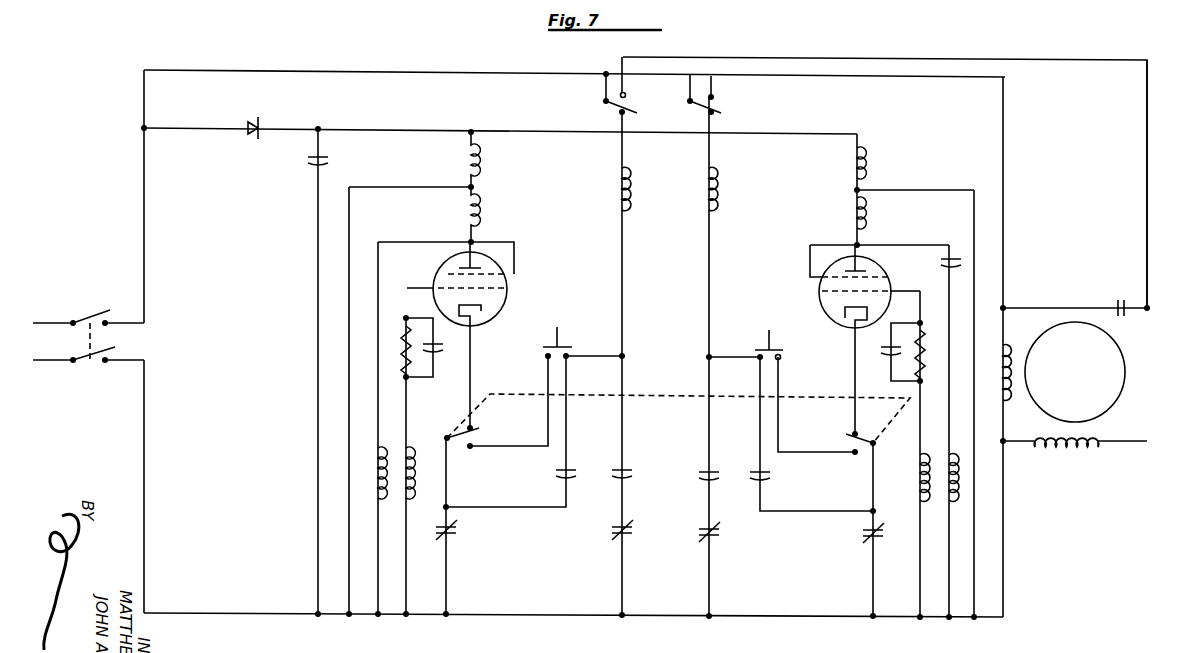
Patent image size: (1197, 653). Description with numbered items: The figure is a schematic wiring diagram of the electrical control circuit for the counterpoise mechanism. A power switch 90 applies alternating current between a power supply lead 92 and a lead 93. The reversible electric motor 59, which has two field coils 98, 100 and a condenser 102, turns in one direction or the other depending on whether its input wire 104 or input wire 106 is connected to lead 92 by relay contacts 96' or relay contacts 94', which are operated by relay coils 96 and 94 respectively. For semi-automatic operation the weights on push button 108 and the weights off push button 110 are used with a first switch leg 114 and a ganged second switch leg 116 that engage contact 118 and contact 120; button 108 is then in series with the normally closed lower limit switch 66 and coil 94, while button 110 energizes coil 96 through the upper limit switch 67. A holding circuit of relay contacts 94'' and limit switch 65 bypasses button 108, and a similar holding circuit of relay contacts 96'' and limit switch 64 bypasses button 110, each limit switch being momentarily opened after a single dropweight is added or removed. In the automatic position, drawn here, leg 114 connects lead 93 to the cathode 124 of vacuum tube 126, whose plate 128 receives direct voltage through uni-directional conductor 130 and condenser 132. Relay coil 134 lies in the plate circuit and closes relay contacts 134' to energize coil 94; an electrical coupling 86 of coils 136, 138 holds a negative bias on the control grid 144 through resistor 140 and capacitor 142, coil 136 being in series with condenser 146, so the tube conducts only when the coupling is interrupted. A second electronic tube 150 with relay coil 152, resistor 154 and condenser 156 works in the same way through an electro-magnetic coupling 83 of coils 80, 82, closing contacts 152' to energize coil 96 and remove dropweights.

The electric motor 59 is at (1125, 364).
The limit switch 64 is at (615, 540).
The limit switch 65 is at (703, 542).
The lower limit switch 66 is at (866, 543).
The upper limit switch 67 is at (442, 540).
The coil 80 is at (372, 484).
The coil 82 is at (408, 456).
The electro-magnetic coupling 83 is at (390, 452).
The electrical coupling 86 is at (934, 495).
The power switch 90 is at (78, 318).
The power supply lead 92 is at (230, 62).
The lead 93 is at (272, 617).
The relay coil 94 is at (734, 189).
The relay contacts 94' is at (600, 115).
The relay contacts 94'' is at (693, 491).
The relay coil 96 is at (644, 189).
The relay contacts 96' is at (730, 101).
The relay contacts 96'' is at (640, 456).
The field coil 98 is at (1008, 350).
The field coil 100 is at (1081, 454).
The condenser 102 is at (1120, 300).
The input wire 104 is at (1004, 118).
The input wire 106 is at (1147, 137).
The weights on push button 108 is at (768, 346).
The weights off push button 110 is at (578, 331).
The first switch leg 114 is at (845, 437).
The second switch leg 116 is at (480, 436).
The contact 118 is at (853, 456).
The contact 120 is at (473, 450).
The cathode 124 is at (845, 310).
The vacuum tube 126 is at (822, 290).
The plate 128 is at (862, 270).
The uni-directional conductor 130 is at (252, 138).
The condenser 132 is at (312, 166).
The relay coil 134 is at (889, 178).
The relay contacts 134' is at (745, 493).
The coil 136 is at (956, 492).
The coil 138 is at (914, 490).
The resistor 140 is at (916, 366).
The capacitor 142 is at (889, 356).
The control grid 144 is at (880, 291).
The condenser 146 is at (958, 258).
The electronic tube 150 is at (507, 283).
The relay coil 152 is at (502, 187).
The contacts 152' is at (549, 489).
The resistor 154 is at (410, 362).
The condenser 156 is at (438, 353).